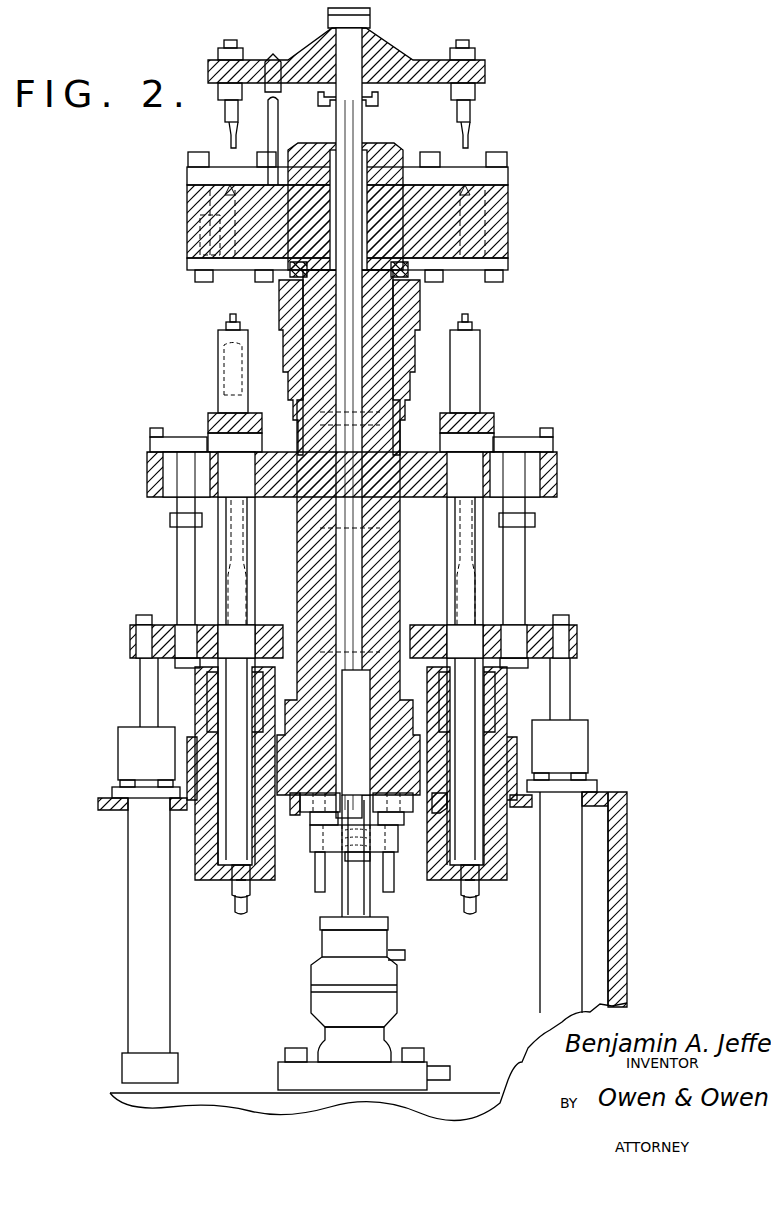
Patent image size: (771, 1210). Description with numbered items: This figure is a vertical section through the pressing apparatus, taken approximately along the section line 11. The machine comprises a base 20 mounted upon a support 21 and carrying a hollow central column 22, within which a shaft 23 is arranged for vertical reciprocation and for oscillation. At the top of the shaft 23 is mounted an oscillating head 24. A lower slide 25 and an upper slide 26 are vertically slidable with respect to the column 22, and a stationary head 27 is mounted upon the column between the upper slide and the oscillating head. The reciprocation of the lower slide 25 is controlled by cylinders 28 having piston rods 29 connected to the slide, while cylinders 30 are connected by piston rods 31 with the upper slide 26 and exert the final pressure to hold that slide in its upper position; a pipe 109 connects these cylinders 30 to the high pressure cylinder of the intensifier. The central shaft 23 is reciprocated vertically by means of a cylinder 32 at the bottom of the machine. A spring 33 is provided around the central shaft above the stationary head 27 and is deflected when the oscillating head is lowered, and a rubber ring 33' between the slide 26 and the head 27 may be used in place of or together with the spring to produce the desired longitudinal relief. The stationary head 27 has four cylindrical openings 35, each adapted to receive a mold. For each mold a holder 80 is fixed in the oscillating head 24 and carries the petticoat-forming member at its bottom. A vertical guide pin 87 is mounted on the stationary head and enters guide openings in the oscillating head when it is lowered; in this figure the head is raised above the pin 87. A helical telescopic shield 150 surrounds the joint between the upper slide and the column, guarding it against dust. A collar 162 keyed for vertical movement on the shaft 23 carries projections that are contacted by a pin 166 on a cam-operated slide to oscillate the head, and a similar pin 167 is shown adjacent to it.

The section line 11- 11 is at (187, 42).
The base 20 is at (418, 795).
The support 21 is at (622, 921).
The hollow central column 22 is at (385, 338).
The shaft 23 is at (330, 283).
The oscillating head 24 is at (487, 70).
The lower slide 25 is at (288, 622).
The upper slide 26 is at (564, 467).
The stationary head 27 is at (515, 201).
The cylinders 28 is at (145, 987).
The piston rods 29 is at (150, 688).
The cylinders 30 is at (215, 877).
The piston rods 31 is at (222, 555).
The cylinder 32 is at (388, 977).
The spring 33 is at (370, 103).
The rubber ring 33' is at (385, 605).
The cylindrical openings 35 is at (488, 236).
The holder 80 is at (224, 118).
The vertical guide pin 87 is at (279, 121).
The pipe 109 is at (240, 915).
The helical telescopic shield 150 is at (420, 300).
The collar 162 is at (320, 843).
The pin 166 is at (390, 885).
The pin 167 is at (318, 878).